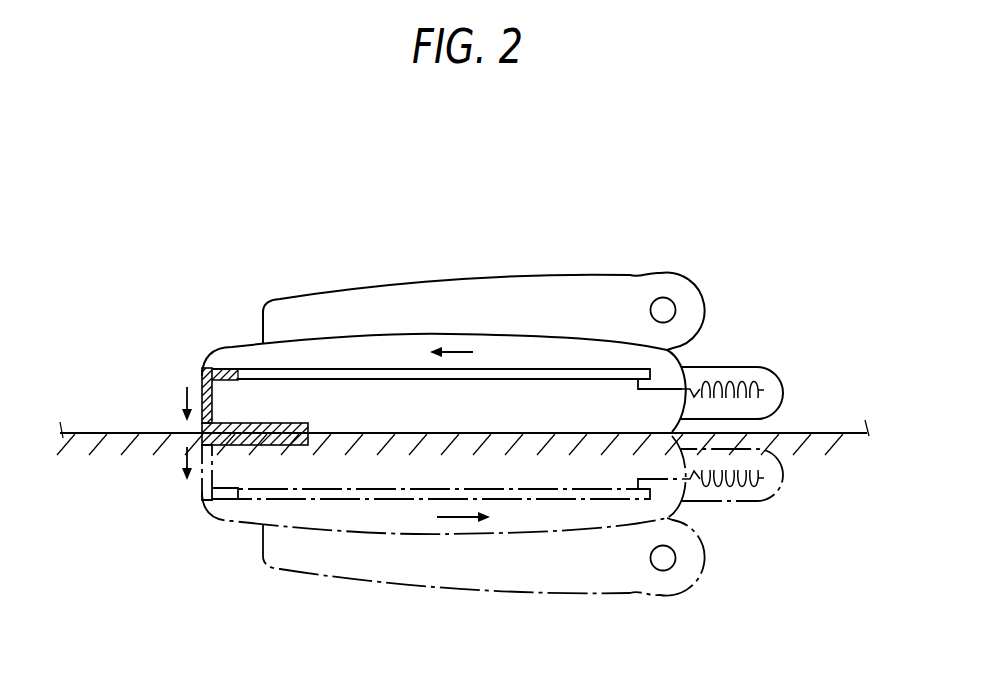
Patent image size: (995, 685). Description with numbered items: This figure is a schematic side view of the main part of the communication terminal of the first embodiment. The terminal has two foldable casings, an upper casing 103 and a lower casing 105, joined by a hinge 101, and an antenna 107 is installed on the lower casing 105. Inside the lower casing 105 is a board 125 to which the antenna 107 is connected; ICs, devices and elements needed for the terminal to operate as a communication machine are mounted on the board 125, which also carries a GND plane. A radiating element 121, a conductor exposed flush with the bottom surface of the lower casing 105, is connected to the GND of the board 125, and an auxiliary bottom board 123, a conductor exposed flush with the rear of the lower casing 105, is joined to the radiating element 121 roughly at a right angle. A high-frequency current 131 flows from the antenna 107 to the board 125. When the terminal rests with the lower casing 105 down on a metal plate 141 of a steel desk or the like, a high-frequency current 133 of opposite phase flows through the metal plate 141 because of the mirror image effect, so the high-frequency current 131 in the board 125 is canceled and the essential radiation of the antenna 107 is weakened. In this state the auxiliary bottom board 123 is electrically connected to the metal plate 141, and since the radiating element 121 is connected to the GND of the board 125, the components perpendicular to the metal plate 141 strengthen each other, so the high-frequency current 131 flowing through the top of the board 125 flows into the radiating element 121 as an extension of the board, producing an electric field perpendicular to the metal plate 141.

The hinge 101 is at (675, 310).
The upper casing 103 is at (527, 268).
The lower casing 105 is at (213, 360).
The antenna 107 is at (773, 368).
The radiating element 121 is at (200, 382).
The auxiliary bottom board 123 is at (263, 446).
The board 125 is at (257, 369).
The high-frequency current 131 is at (455, 352).
The high-frequency current of opposite phase 133 is at (453, 517).
The metal plate 141 is at (805, 432).